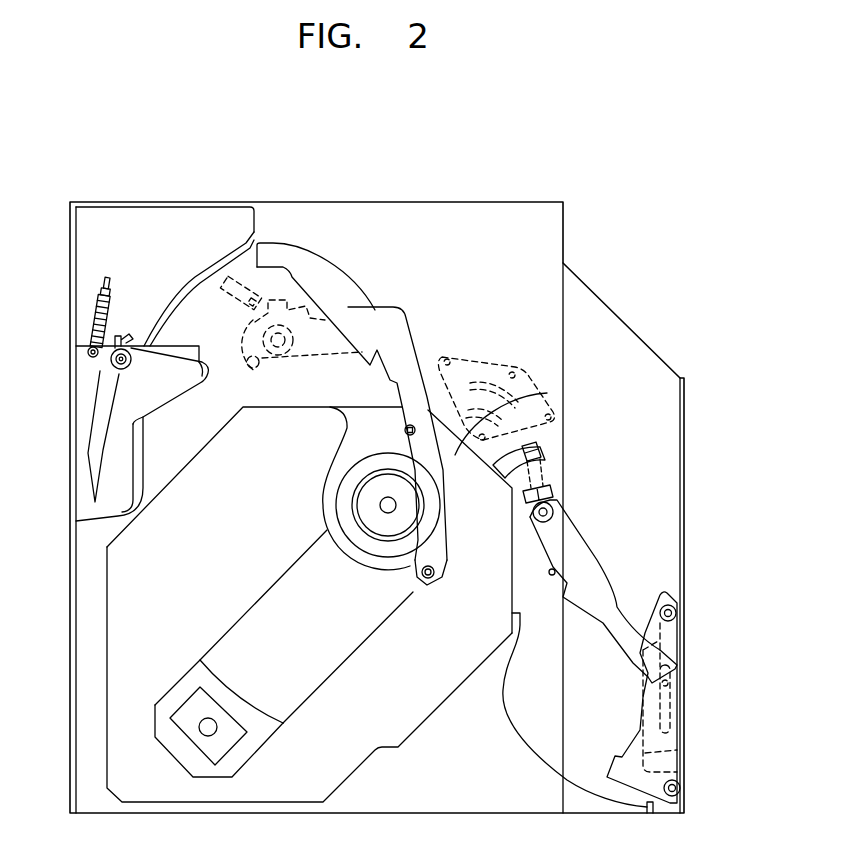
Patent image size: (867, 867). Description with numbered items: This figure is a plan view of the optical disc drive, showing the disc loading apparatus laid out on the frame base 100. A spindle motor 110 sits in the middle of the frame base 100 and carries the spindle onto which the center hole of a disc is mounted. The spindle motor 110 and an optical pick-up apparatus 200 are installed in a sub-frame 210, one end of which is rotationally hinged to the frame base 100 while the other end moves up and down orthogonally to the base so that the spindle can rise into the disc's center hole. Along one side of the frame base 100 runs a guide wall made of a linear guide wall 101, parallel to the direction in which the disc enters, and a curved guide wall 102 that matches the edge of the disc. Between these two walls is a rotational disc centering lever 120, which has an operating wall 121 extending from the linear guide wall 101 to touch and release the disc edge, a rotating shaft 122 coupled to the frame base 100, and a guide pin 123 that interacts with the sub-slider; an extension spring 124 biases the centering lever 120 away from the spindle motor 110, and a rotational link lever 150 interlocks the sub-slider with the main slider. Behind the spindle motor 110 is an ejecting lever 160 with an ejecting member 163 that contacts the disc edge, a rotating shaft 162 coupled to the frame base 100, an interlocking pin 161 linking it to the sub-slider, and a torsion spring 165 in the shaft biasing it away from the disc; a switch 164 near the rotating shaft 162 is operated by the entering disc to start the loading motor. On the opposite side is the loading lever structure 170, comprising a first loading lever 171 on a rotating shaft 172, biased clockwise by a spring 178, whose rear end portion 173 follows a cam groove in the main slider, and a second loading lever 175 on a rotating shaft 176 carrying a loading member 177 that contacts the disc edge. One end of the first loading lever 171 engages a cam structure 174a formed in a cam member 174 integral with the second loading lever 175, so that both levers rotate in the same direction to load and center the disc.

The frame base 100 is at (382, 212).
The linear guide wall 101 is at (70, 598).
The curved guide wall 102 is at (195, 277).
The spindle motor 110 is at (367, 523).
The disc centering lever 120 is at (128, 405).
The operating wall 121 is at (95, 462).
The rotating shaft 122 is at (110, 358).
The guide pin 123 is at (197, 373).
The extension spring 124 is at (95, 322).
The rotational link lever 150 is at (486, 357).
The ejecting lever 160 is at (397, 318).
The interlocking pin 161 is at (253, 368).
The rotating shaft 162 is at (278, 338).
The ejecting member 163 is at (415, 577).
The switch 164 is at (241, 268).
The torsion spring 165 is at (298, 358).
The loading lever structure 170 is at (762, 545).
The first loading lever 171 is at (603, 580).
The rotating shaft 172 is at (553, 510).
The rear end portion 173 is at (540, 447).
The cam member 174 is at (677, 750).
The cam structure 174a is at (670, 713).
The second loading lever 175 is at (650, 647).
The rotating shaft 176 is at (676, 610).
The loading member 177 is at (680, 788).
The spring 178 is at (548, 393).
The optical pick-up apparatus 200 is at (237, 700).
The sub-frame 210 is at (413, 712).